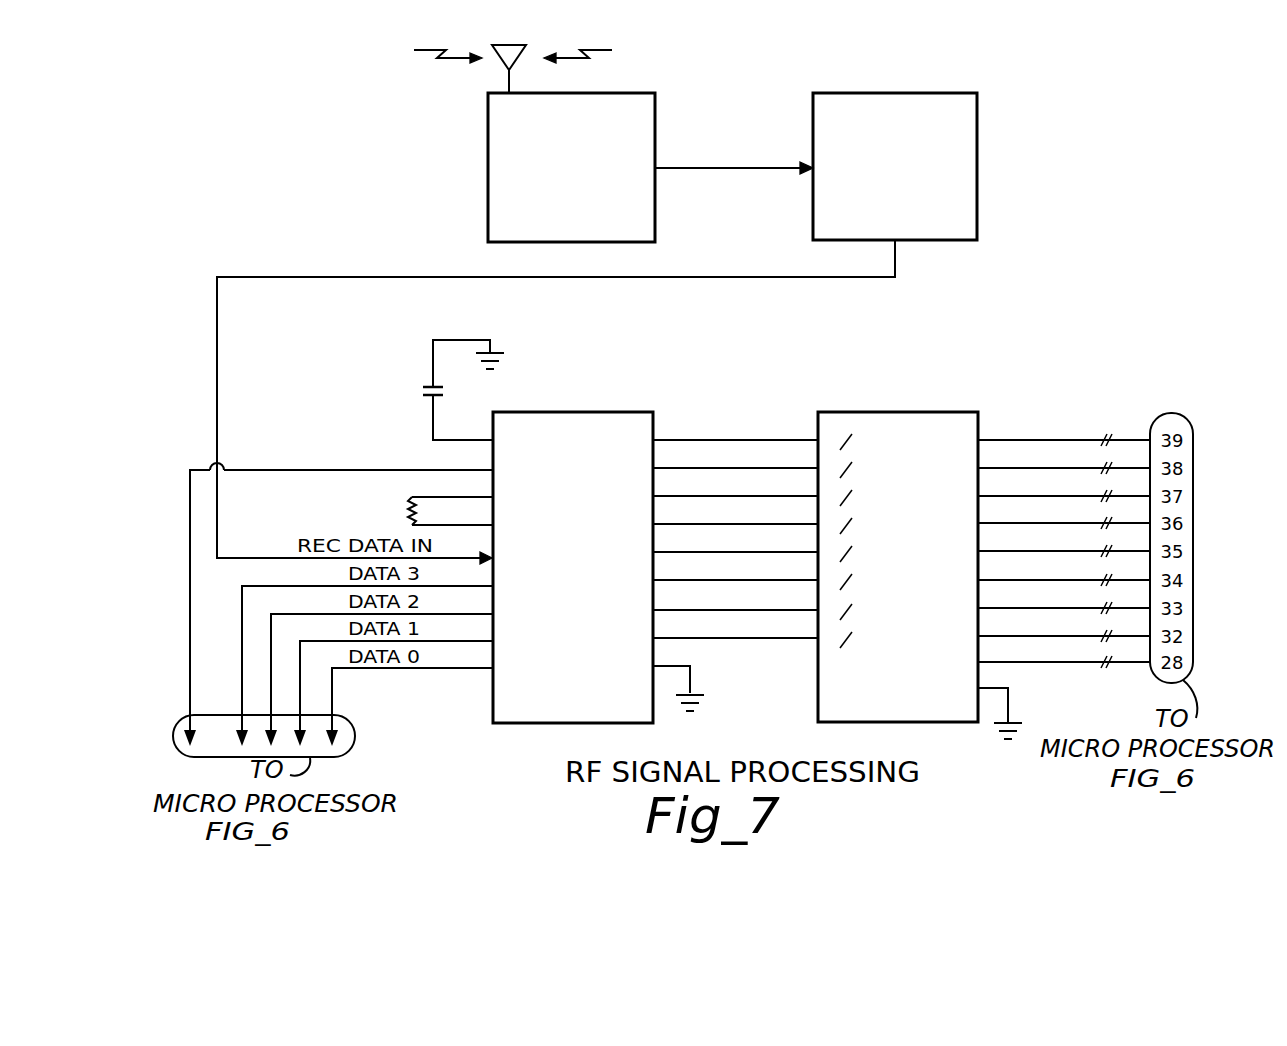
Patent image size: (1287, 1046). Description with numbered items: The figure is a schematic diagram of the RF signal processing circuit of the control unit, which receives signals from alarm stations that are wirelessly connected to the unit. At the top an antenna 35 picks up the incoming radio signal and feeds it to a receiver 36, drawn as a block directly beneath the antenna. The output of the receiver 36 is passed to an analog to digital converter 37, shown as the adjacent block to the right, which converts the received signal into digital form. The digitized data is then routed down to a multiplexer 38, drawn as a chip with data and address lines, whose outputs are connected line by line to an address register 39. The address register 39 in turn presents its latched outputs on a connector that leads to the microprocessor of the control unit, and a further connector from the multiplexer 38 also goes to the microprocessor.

The antenna 35 is at (517, 64).
The receiver 36 is at (655, 120).
The analog to digital converter 37 is at (977, 124).
The multiplexer 38 is at (645, 412).
The address register 39 is at (970, 412).